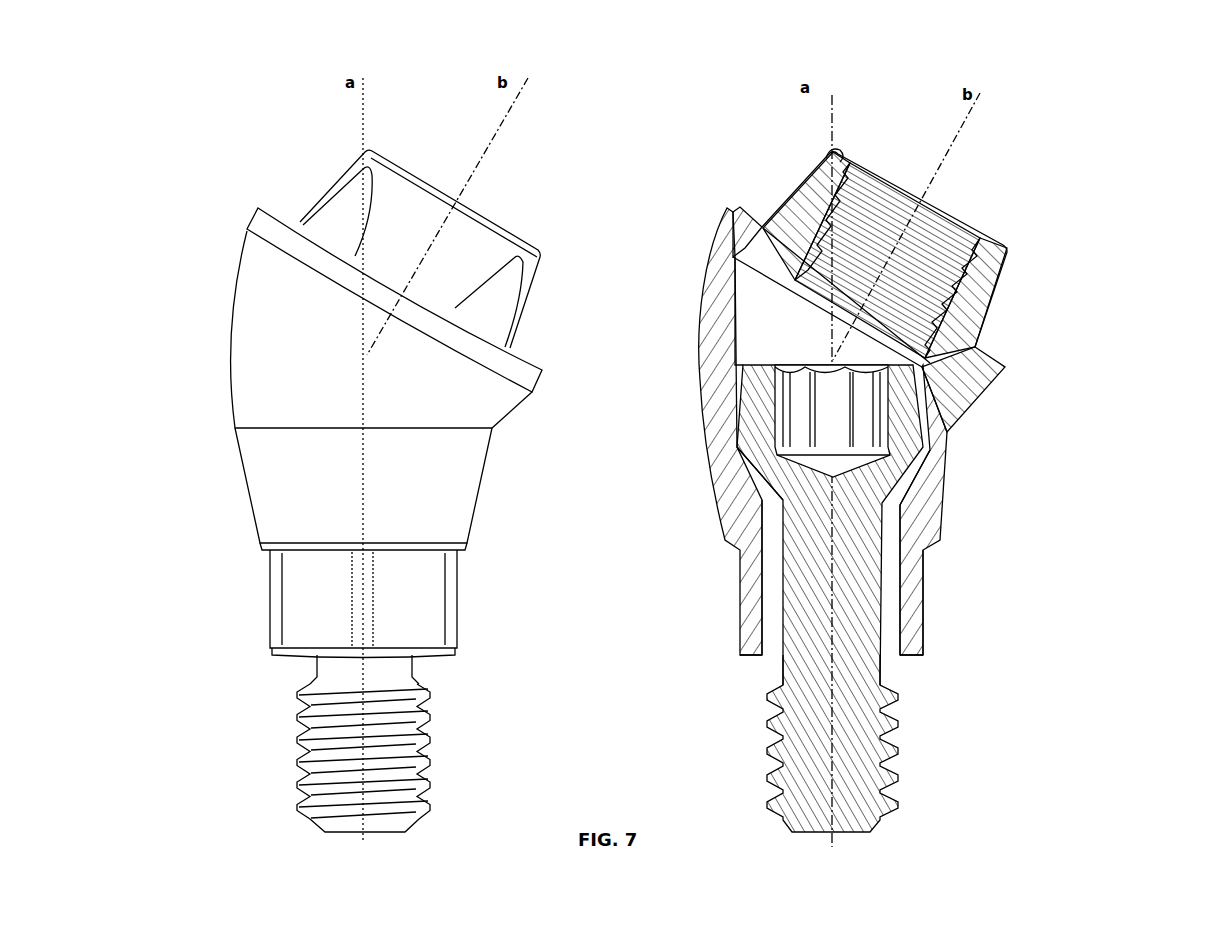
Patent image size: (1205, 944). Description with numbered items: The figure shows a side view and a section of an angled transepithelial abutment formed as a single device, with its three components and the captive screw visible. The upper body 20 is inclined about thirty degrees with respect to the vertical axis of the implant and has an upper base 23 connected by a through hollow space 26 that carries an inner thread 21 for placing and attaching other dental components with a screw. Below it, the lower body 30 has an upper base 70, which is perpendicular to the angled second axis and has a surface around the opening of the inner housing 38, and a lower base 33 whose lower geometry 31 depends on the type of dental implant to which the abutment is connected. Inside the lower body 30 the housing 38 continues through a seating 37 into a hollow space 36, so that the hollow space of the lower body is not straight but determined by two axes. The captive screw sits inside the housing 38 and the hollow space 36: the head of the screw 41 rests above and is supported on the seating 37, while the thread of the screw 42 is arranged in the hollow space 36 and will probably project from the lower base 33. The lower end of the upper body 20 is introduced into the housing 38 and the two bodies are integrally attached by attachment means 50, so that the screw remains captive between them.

The upper body 20 is at (477, 243).
The inner thread 21 is at (923, 260).
The upper base 23 is at (833, 152).
The through hollow space 26 is at (917, 325).
The lower body 30 is at (263, 378).
The lower geometry 31 is at (928, 610).
The lower base 33 is at (920, 650).
The hollow space 36 is at (895, 562).
The seating 37 is at (918, 468).
The inner housing 38 is at (767, 323).
The head of the screw 41 is at (917, 435).
The thread of the screw 42 is at (870, 752).
The attachment means 50 is at (1005, 367).
The upper base 70 is at (278, 222).